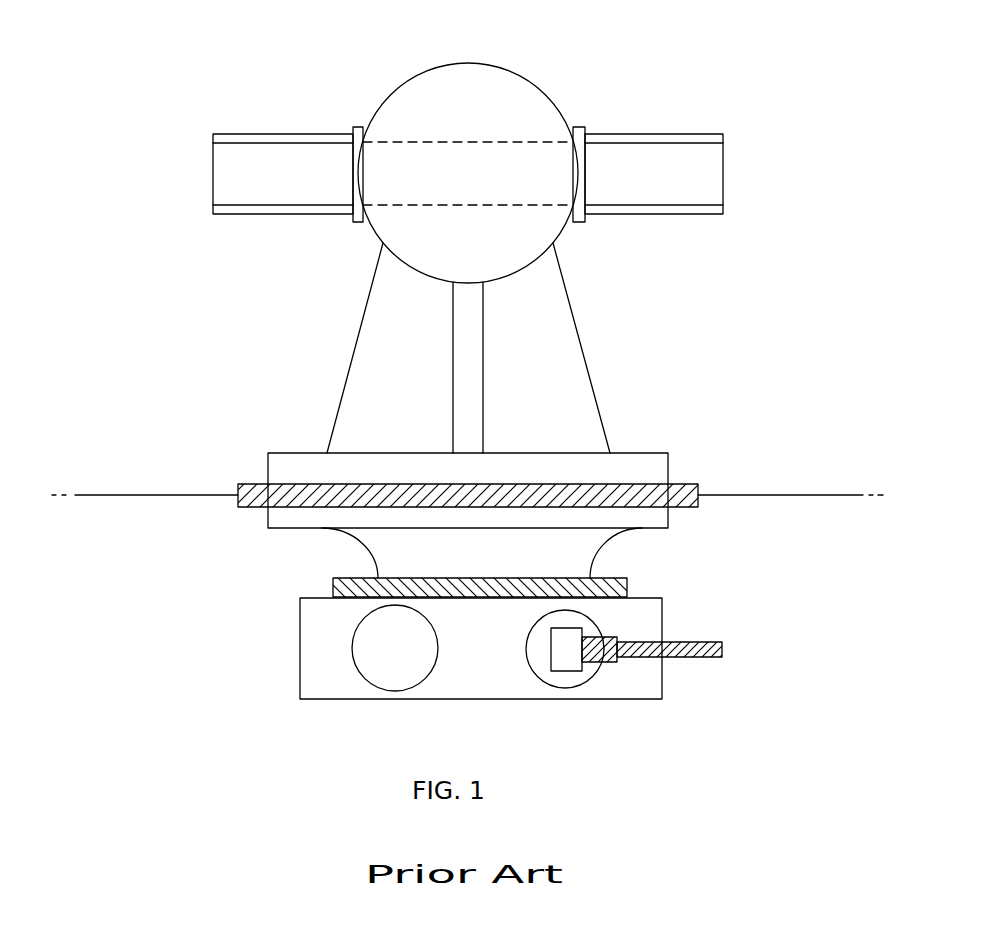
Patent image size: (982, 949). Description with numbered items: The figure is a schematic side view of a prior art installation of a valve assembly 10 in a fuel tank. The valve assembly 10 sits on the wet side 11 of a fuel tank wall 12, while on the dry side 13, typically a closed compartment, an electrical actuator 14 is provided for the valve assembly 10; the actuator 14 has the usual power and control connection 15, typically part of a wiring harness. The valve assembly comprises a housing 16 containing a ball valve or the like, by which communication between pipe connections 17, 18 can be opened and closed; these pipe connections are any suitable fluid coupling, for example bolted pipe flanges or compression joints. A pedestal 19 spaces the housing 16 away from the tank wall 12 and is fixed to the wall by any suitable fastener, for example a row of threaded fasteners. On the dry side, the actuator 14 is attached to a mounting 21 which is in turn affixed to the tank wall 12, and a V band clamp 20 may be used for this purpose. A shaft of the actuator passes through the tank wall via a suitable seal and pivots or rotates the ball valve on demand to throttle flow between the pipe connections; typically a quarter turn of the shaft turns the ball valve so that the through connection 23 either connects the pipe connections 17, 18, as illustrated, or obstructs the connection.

The valve assembly 10 is at (263, 312).
The wet side 11 is at (708, 373).
The fuel tank wall 12 is at (295, 495).
The dry side 13 is at (146, 619).
The electrical actuator 14 is at (320, 650).
The power and control connection 15 is at (700, 658).
The housing 16 is at (420, 100).
The pipe connection 17 is at (282, 168).
The pipe connection 18 is at (657, 168).
The pedestal 19 is at (372, 357).
The V band clamp 20 is at (627, 591).
The mounting 21 is at (383, 555).
The through connection 23 is at (523, 142).